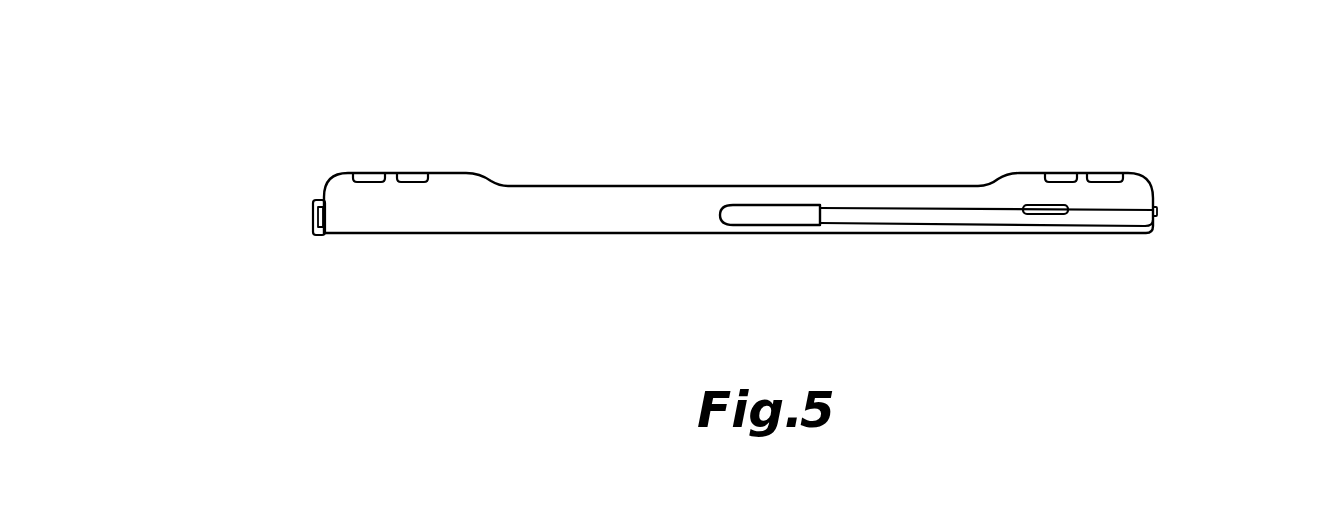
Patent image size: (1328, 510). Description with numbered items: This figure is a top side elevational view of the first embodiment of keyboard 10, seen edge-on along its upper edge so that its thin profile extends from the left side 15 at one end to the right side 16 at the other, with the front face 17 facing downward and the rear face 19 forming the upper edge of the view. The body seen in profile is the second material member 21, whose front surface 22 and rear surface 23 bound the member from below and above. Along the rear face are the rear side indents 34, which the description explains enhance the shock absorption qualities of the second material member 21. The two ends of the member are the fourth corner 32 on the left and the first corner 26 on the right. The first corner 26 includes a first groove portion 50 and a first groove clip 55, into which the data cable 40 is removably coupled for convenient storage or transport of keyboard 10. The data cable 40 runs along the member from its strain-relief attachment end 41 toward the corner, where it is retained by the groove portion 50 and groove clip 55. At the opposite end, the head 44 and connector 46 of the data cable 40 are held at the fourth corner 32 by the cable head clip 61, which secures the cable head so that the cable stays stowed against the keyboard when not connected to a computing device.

The keyboard 10 is at (307, 376).
The left side 15 is at (173, 208).
The right side 16 is at (1225, 200).
The front face 17 is at (589, 289).
The rear face 19 is at (670, 132).
The second material member 21 is at (492, 222).
The front surface 22 is at (437, 233).
The rear surface 23 is at (447, 173).
The first corner 26 is at (1169, 150).
The fourth corner 32 is at (320, 131).
The rear side indents 34 is at (415, 173).
The data cable 40 is at (902, 220).
The strain-relief attachment end 41 is at (777, 223).
The head 44 is at (313, 215).
The connector 46 is at (313, 224).
The first groove portion 50 is at (1125, 212).
The first groove clip 55 is at (1042, 214).
The cable head clip 61 is at (317, 197).